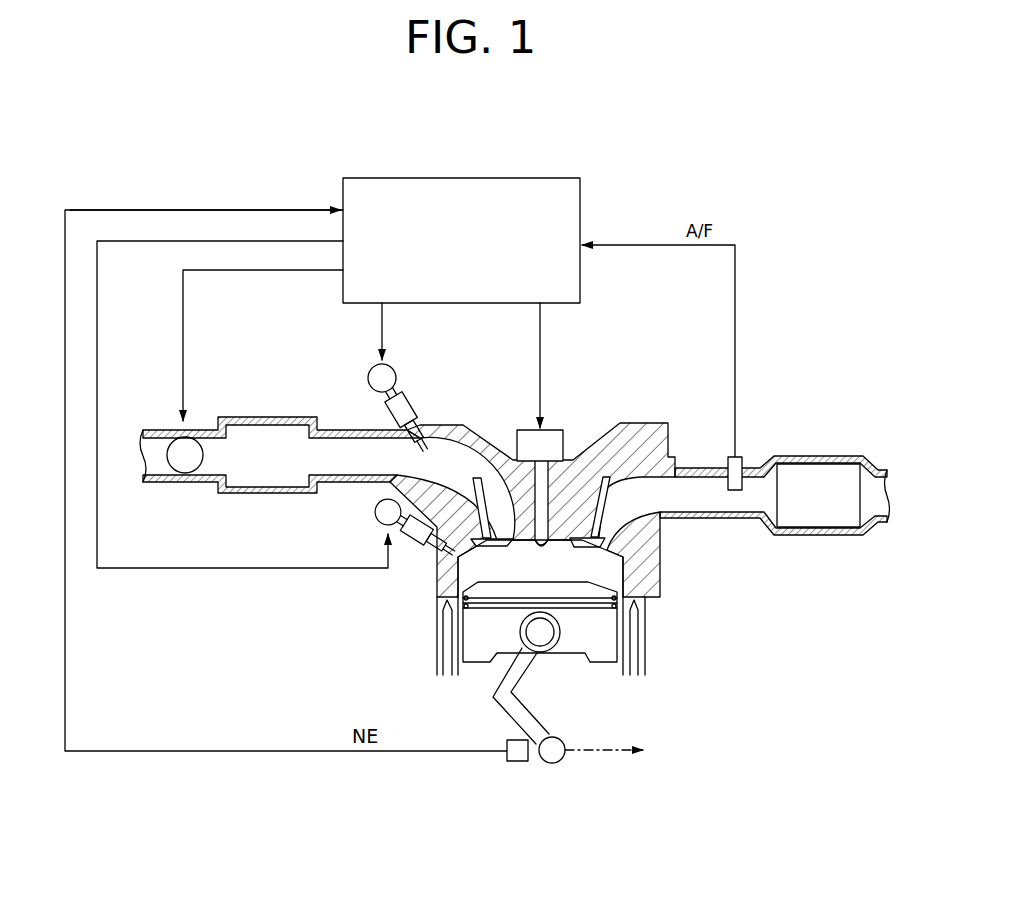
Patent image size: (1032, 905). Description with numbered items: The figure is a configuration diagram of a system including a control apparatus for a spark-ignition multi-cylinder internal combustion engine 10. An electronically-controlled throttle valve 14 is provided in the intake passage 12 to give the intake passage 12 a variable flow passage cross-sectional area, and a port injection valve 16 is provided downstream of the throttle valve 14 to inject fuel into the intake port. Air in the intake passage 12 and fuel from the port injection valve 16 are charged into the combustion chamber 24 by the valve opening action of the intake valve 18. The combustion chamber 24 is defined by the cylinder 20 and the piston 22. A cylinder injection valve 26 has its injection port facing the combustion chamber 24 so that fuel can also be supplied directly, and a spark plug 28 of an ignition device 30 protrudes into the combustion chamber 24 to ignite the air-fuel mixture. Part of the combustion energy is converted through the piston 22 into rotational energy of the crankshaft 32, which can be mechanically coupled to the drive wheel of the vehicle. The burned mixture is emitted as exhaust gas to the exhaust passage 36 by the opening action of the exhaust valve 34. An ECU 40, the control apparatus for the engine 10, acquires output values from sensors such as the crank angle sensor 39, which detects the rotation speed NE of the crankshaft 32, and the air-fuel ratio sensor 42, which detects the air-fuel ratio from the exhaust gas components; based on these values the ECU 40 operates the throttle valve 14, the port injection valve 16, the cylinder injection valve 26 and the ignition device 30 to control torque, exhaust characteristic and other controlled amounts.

The internal combustion engine 10 is at (660, 402).
The intake passage 12 is at (342, 466).
The throttle valve 14 is at (195, 448).
The port injection valve 16 is at (415, 406).
The intake valve 18 is at (470, 508).
The cylinder 20 is at (437, 614).
The piston 22 is at (610, 630).
The combustion chamber 24 is at (600, 572).
The cylinder injection valve 26 is at (412, 548).
The spark plug 28 is at (536, 549).
The ignition device 30 is at (572, 418).
The crankshaft 32 is at (556, 738).
The exhaust valve 34 is at (605, 522).
The exhaust passage 36 is at (710, 518).
The crank angle sensor 39 is at (517, 762).
The ECU 40 is at (583, 200).
The air-fuel ratio sensor 42 is at (738, 457).